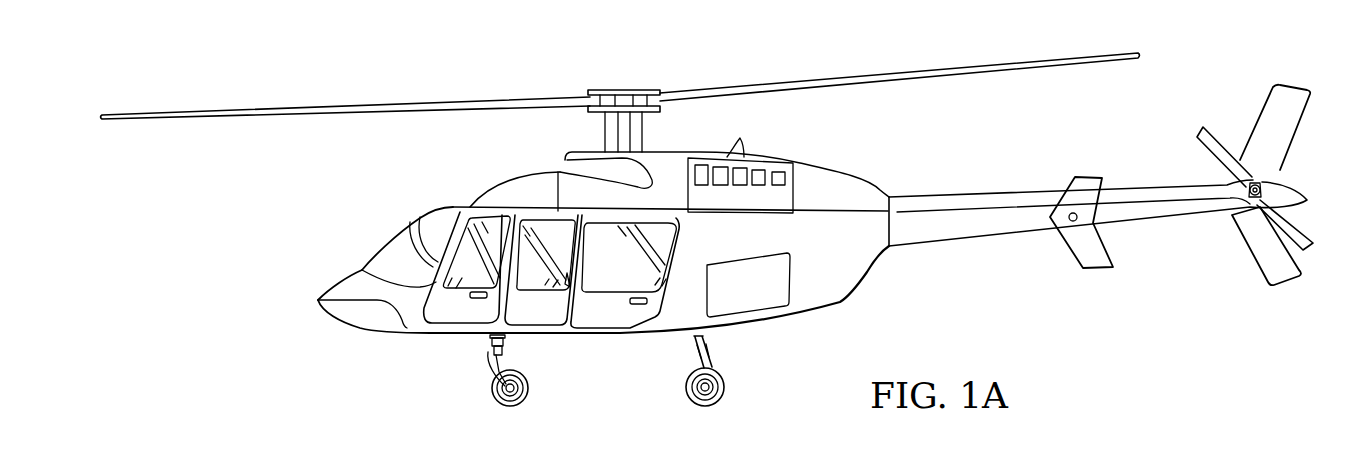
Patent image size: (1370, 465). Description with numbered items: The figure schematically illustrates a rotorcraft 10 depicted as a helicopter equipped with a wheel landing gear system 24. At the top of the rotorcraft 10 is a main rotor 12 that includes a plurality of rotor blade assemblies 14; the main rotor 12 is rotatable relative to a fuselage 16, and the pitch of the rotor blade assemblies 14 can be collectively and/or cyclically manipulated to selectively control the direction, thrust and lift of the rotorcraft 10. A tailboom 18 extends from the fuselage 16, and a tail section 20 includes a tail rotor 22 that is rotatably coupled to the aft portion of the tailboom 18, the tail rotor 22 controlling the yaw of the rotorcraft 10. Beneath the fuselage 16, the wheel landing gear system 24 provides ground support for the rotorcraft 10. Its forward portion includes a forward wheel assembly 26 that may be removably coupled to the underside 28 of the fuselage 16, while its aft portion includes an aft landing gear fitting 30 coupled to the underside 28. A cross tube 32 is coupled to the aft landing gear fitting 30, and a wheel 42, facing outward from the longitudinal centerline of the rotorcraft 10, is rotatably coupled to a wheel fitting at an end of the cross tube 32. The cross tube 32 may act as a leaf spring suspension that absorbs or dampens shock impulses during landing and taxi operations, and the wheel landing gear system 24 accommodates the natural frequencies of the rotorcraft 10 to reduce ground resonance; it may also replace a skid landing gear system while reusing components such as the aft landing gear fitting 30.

The rotorcraft 10 is at (312, 172).
The main rotor 12 is at (603, 81).
The rotor blade assemblies 14 is at (992, 73).
The fuselage 16 is at (813, 283).
The tailboom 18 is at (1023, 236).
The tail section 20 is at (1240, 262).
The tail rotor 22 is at (1254, 178).
The wheel landing gear system 24 is at (452, 355).
The forward wheel assembly 26 is at (490, 368).
The underside 28 is at (597, 338).
The aft landing gear fitting 30 is at (708, 342).
The cross tube 32 is at (694, 359).
The wheel 42 is at (708, 406).